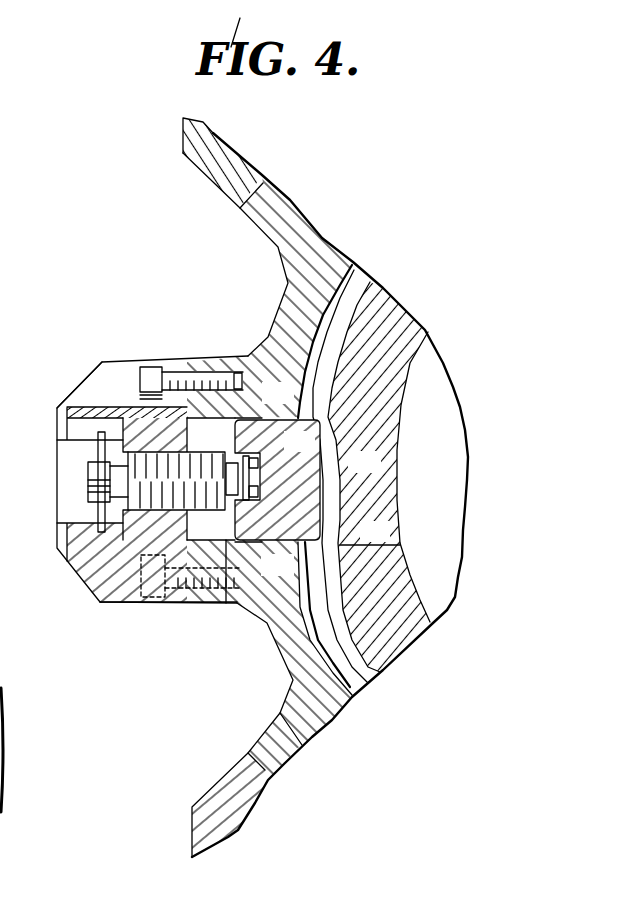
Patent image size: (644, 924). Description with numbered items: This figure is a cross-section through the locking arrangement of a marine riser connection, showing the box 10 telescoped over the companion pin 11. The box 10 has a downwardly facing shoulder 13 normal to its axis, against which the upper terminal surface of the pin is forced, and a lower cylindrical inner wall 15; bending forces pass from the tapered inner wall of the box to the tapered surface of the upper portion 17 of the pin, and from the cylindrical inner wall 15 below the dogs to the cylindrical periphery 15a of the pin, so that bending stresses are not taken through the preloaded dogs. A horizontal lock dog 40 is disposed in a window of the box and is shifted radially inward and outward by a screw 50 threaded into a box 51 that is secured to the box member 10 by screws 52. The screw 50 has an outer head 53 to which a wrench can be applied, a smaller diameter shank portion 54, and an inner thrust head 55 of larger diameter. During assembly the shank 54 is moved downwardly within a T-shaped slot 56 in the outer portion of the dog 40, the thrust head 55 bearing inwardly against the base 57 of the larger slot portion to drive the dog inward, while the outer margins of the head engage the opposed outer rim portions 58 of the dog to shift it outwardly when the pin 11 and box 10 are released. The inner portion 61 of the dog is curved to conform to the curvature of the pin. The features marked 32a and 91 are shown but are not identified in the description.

The box 10 is at (270, 298).
The pin 11 is at (426, 371).
The downwardly facing shoulder 13 is at (0, 262).
The upper portion of the pin 17 is at (0, 297).
The lower cylindrical inner wall 15 is at (323, 639).
The cylindrical periphery of the pin 15a is at (308, 612).
The mounting surface 32a is at (52, 393).
The lock dog 40 is at (318, 456).
The screw 50 is at (152, 465).
The box 51 is at (230, 176).
The screws 52 is at (202, 362).
The outer head 53 is at (95, 480).
The shank portion 54 is at (229, 499).
The inner thrust head 55 is at (272, 461).
The T-shaped slot 56 is at (262, 505).
The base of the larger slot 57 is at (256, 478).
The outer rim portions 58 is at (240, 417).
The inner portion of the dog 61 is at (258, 497).
The base surface 91 is at (226, 603).